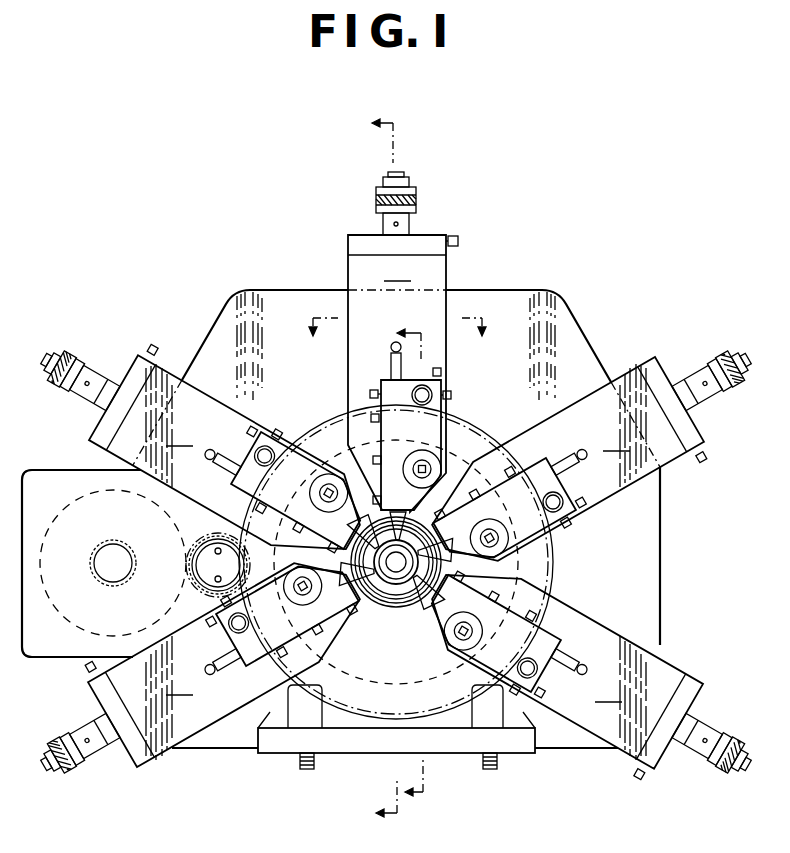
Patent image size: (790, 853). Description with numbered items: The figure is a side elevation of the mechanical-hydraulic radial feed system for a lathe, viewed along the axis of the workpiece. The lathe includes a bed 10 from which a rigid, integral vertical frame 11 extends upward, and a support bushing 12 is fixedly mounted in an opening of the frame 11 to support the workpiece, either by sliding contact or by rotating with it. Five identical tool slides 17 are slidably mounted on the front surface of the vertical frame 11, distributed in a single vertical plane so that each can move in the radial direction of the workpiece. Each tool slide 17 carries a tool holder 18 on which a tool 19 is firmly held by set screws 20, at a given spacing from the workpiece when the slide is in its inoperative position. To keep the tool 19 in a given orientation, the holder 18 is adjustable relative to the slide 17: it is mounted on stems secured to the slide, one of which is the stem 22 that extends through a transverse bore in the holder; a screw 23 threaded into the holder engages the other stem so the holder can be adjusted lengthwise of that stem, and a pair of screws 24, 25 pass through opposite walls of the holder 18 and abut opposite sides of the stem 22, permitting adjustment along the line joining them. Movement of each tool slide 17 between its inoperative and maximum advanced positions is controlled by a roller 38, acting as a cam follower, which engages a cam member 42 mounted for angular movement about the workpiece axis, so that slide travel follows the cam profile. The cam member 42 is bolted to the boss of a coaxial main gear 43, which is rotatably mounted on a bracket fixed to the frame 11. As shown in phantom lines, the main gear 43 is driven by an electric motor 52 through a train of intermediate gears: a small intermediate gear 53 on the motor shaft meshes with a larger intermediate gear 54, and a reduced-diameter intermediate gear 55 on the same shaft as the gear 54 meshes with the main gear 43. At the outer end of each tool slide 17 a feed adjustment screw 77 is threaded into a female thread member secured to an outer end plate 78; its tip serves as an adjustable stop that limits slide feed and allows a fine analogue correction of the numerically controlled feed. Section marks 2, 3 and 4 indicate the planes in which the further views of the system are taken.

The bed 10 is at (511, 749).
The vertical frame 11 is at (568, 331).
The support bushing 12 is at (403, 595).
The tool slide 17 is at (396, 489).
The tool holder 18 is at (447, 425).
The tool 19 is at (379, 600).
The set screws 20 is at (349, 424).
The stem 22 is at (432, 393).
The screw 23 is at (414, 470).
The screw 24 is at (374, 390).
The screw 25 is at (451, 400).
The roller 38 is at (545, 470).
The cam member 42 is at (548, 565).
The main gear 43 is at (309, 434).
The electric motor 52 is at (70, 632).
The small intermediate gear 53 is at (102, 556).
The intermediate gear 54 is at (128, 540).
The intermediate gear 55 is at (211, 542).
The feed adjustment screw 77 is at (410, 188).
The outer end plate 78 is at (425, 248).
The section line 2- 2 is at (373, 472).
The section line 3- 3 is at (397, 344).
The section line 4- 4 is at (408, 564).